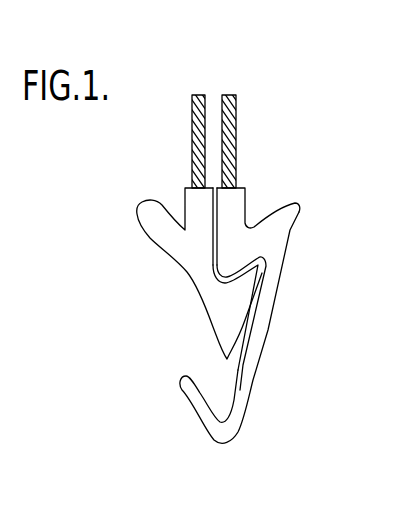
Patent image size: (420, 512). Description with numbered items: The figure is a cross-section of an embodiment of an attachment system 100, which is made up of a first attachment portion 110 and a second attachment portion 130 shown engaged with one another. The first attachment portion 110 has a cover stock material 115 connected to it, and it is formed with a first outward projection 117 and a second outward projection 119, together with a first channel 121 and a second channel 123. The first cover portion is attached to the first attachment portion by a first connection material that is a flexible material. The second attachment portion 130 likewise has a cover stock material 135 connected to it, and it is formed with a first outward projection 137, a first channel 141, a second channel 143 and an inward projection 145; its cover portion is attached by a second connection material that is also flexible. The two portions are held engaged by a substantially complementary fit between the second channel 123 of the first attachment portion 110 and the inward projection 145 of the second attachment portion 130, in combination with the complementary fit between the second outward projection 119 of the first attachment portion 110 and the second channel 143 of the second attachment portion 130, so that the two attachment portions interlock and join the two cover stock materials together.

The attachment system 100 is at (154, 174).
The first attachment portion 110 is at (182, 255).
The cover stock material 115 is at (193, 98).
The cover stock material 135 is at (235, 100).
The first outward projection 117 is at (141, 211).
The first channel 121 is at (171, 214).
The first channel 141 is at (248, 227).
The first outward projection 137 is at (300, 207).
The second channel 143 is at (263, 255).
The second outward projection 119 is at (267, 273).
The second attachment portion 130 is at (268, 302).
The inward projection 145 is at (210, 263).
The second channel 123 is at (221, 281).